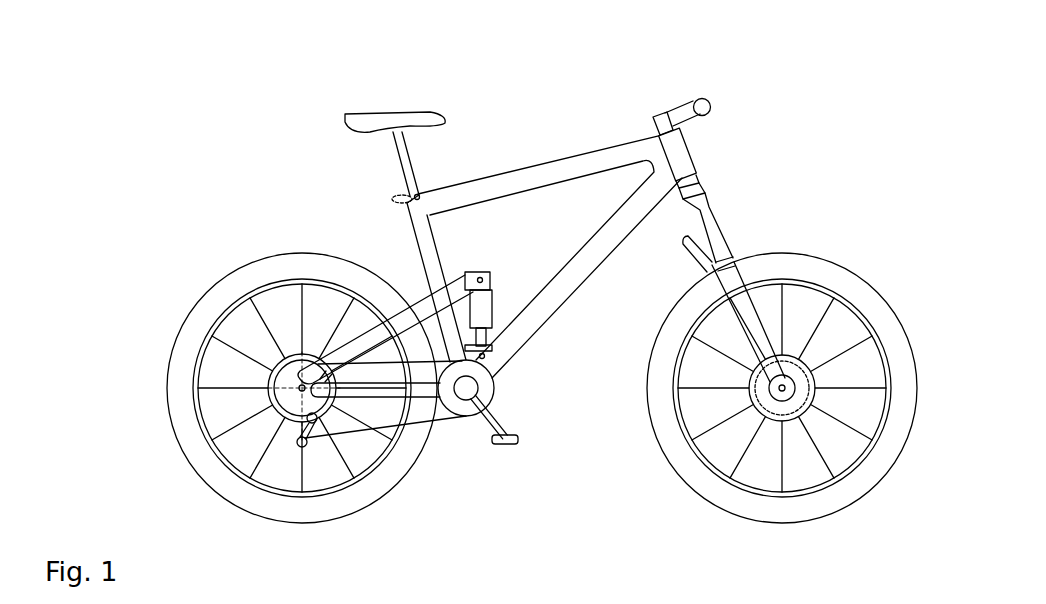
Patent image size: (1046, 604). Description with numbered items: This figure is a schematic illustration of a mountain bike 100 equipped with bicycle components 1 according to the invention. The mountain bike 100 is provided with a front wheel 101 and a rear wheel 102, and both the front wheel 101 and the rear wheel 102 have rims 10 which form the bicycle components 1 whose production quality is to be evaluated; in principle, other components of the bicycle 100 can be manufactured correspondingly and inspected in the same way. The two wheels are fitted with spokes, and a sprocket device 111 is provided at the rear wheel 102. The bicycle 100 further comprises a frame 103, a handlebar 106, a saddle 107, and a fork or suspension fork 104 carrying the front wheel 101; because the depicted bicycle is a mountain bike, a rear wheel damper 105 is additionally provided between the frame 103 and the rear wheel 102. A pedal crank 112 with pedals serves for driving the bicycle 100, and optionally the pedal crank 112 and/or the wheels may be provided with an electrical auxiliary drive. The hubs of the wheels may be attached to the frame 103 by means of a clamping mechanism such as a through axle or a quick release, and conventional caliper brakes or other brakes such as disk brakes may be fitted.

The mountain bike 100 is at (248, 142).
The front wheel 101 is at (868, 254).
The rear wheel 102 is at (220, 259).
The frame 103 is at (570, 168).
The suspension fork 104 is at (733, 258).
The rear wheel damper 105 is at (485, 298).
The handlebar 106 is at (703, 99).
The saddle 107 is at (400, 112).
The sprocket device 111 is at (268, 356).
The bicycle component 1 is at (261, 378).
The rim 10 is at (863, 460).
The pedal crank 112 is at (496, 463).